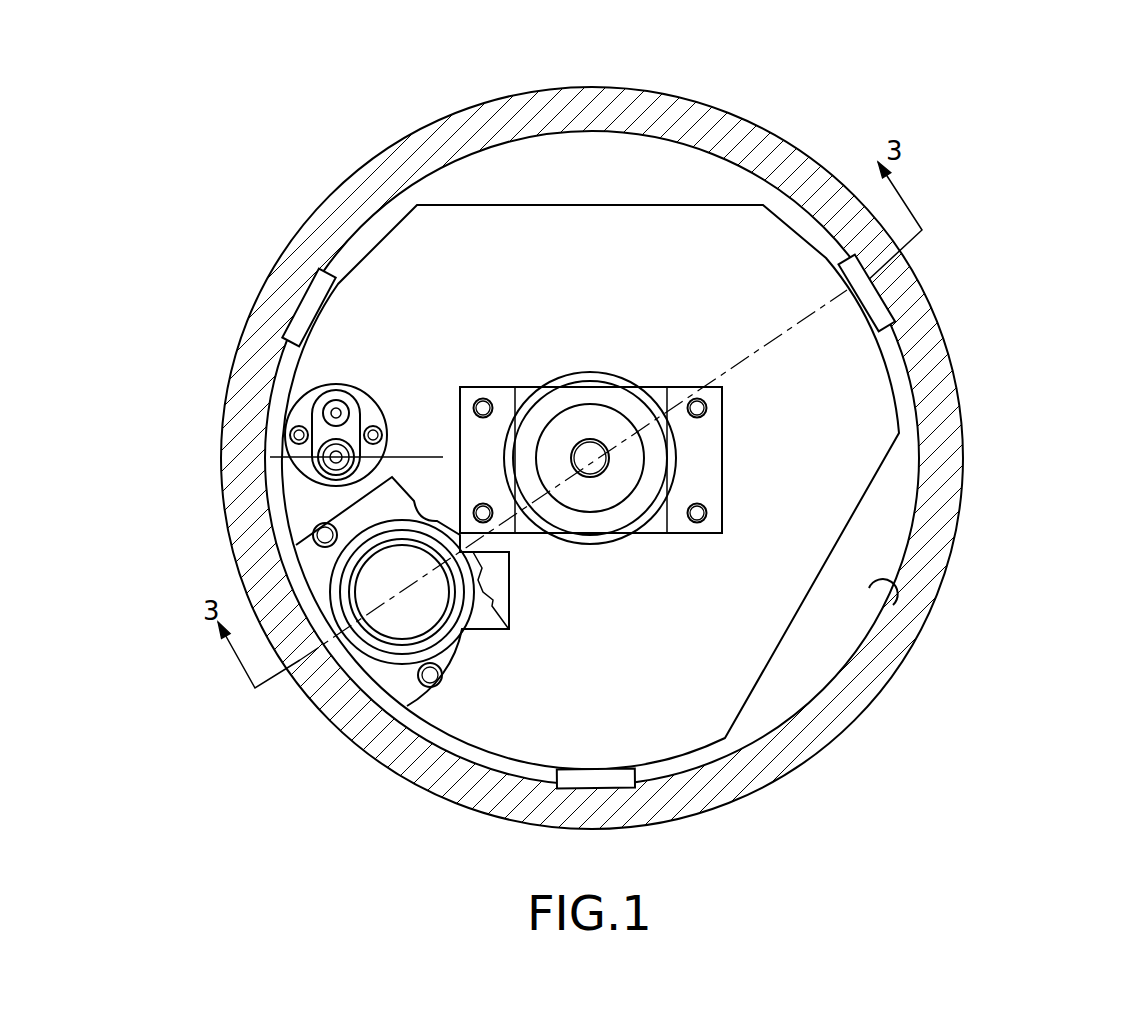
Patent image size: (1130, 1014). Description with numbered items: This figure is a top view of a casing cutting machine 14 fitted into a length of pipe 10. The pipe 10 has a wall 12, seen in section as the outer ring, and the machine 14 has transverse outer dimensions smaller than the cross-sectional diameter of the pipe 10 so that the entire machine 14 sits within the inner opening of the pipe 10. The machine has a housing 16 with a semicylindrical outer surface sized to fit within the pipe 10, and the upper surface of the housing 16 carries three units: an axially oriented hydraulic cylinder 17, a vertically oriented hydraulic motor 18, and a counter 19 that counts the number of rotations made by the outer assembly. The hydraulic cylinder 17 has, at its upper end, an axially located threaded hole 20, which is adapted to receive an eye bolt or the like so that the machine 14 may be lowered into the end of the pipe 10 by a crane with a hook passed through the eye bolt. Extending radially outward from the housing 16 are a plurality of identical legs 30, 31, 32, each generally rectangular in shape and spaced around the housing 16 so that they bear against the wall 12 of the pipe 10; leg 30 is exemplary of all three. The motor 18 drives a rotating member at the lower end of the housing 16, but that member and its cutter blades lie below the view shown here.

The length of pipe 10 is at (840, 733).
The wall 12 is at (878, 605).
The casing cutting machine 14 is at (550, 201).
The housing 16 is at (822, 495).
The hydraulic cylinder 17 is at (625, 378).
The hydraulic motor 18 is at (377, 640).
The counter 19 is at (290, 390).
The threaded hole 20 is at (607, 458).
The leg 30 is at (877, 317).
The leg 31 is at (322, 285).
The leg 32 is at (623, 782).